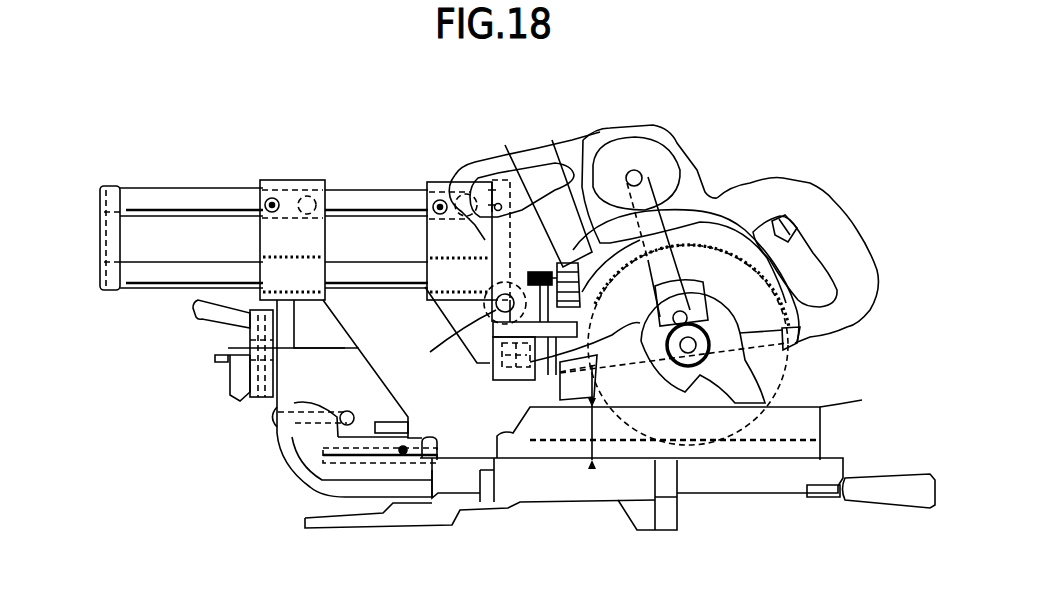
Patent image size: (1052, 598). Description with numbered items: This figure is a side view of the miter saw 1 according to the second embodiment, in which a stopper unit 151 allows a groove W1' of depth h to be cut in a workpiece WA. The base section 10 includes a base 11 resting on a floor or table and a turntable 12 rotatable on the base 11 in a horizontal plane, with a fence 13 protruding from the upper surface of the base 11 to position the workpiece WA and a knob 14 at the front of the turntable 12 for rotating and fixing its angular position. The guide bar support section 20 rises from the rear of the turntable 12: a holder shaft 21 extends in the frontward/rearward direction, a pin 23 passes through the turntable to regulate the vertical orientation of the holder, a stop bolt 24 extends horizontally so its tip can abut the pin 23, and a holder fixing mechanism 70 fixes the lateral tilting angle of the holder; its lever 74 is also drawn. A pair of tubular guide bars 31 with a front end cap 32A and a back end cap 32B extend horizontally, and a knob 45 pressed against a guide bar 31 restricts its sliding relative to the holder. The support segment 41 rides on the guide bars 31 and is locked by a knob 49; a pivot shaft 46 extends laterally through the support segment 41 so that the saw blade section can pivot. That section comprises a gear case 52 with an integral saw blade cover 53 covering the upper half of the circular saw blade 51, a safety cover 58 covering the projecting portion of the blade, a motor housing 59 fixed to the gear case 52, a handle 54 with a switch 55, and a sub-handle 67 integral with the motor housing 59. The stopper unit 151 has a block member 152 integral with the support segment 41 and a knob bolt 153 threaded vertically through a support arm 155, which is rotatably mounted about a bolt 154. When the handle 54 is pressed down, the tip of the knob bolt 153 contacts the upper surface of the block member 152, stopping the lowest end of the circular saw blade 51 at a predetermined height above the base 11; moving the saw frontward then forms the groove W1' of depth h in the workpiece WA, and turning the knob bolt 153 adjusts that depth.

The miter saw 1 is at (717, 110).
The base section 10 is at (742, 522).
The base 11 is at (677, 507).
The turntable 12 is at (677, 482).
The fence 13 is at (497, 444).
The knob 14 is at (905, 476).
The guide bar support section 20 is at (325, 325).
The holder shaft 21 is at (325, 470).
The pin 23 is at (288, 410).
The stop bolt 24 is at (300, 435).
The guide bar 31 is at (363, 190).
The front end cap 32A is at (525, 162).
The back end cap 32B is at (100, 239).
The support segment 41 is at (446, 327).
The knob 45 is at (308, 200).
The pivot shaft 46 is at (432, 354).
The knob 49 is at (452, 184).
The circular saw blade 51 is at (598, 445).
The gear case 52 is at (703, 165).
The saw blade cover 53 is at (720, 233).
The handle 54 is at (810, 254).
The switch 55 is at (807, 242).
The safety cover 58 is at (775, 365).
The motor housing 59 is at (634, 140).
The sub-handle 67 is at (530, 148).
The holder fixing mechanism 70 is at (224, 382).
The clamp lever 74 is at (210, 318).
The stopper unit 151 is at (582, 297).
The block member 152 is at (492, 370).
The knob bolt 153 is at (560, 150).
The bolt 154 is at (614, 180).
The support arm 155 is at (665, 342).
The workpiece WA is at (861, 400).
The groove W1' is at (559, 499).
The depth h is at (600, 417).